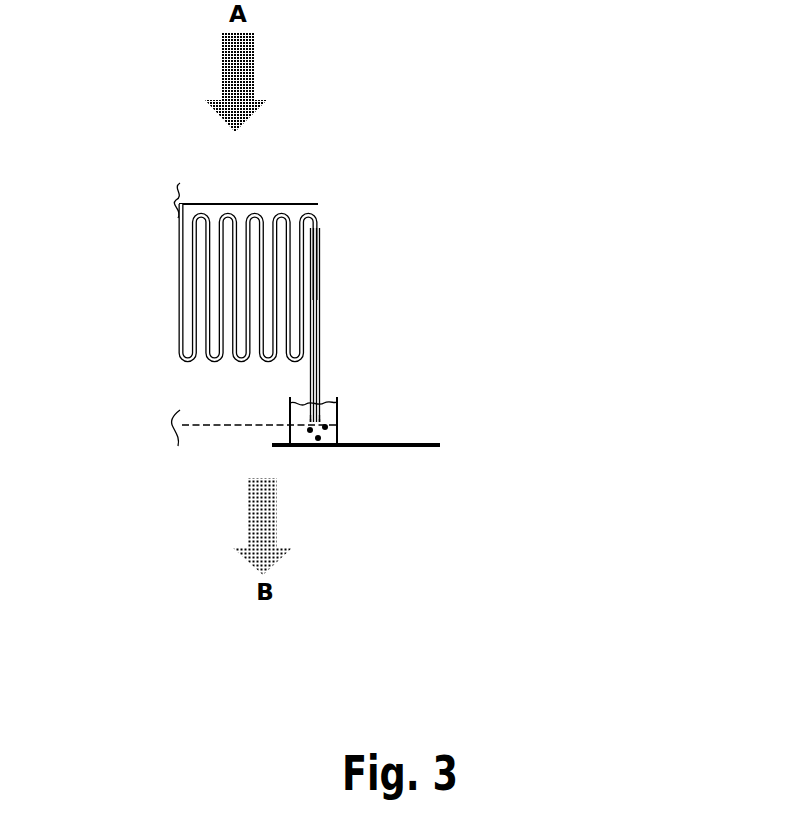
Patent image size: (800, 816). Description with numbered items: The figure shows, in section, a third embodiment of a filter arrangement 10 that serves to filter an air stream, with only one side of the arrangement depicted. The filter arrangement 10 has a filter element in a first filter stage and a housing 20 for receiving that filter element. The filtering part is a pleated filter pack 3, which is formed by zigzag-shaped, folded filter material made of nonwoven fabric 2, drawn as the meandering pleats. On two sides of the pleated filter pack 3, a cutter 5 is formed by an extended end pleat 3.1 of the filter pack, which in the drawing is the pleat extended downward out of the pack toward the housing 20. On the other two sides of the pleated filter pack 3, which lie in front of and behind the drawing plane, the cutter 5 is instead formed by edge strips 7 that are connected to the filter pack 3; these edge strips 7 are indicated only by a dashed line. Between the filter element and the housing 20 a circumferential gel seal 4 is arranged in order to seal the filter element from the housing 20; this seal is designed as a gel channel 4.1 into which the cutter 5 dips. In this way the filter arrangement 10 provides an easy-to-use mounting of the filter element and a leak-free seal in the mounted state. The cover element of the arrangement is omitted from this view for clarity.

The filter arrangement 10 is at (632, 169).
The filter material 2 is at (174, 318).
The pleated filter pack 3 is at (318, 241).
The cutter 5 is at (319, 383).
The extended end pleat 3.1 is at (314, 422).
The edge strips 7 is at (282, 381).
The gel seal 4 is at (199, 405).
The gel channel 4.1 is at (344, 428).
The housing 20 is at (402, 447).